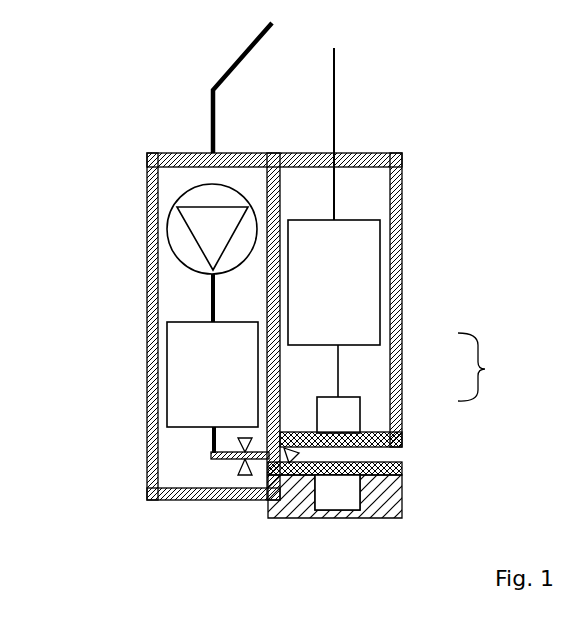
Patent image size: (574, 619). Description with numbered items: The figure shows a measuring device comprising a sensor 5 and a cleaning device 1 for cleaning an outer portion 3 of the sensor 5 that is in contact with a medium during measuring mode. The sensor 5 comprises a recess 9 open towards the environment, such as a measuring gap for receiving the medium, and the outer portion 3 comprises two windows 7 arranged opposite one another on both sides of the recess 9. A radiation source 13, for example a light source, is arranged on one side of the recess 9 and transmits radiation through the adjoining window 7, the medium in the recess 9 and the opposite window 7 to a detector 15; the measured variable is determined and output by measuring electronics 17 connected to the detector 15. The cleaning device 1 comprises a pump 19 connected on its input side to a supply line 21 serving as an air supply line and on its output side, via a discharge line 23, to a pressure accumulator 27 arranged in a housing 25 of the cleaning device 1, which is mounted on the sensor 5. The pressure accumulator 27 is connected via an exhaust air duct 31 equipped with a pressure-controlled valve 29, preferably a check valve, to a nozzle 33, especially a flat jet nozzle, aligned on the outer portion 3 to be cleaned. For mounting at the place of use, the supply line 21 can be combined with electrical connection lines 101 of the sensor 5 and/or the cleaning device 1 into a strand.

The cleaning device 1 is at (122, 158).
The outer portion 3 is at (481, 367).
The sensor 5 is at (412, 155).
The window 7 is at (347, 433).
The recess 9 is at (382, 457).
The radiation source 13 is at (337, 492).
The detector 15 is at (338, 389).
The measuring electronics 17 is at (334, 282).
The pump 19 is at (205, 235).
The supply line 21 is at (233, 67).
The discharge line 23 is at (210, 297).
The housing 25 is at (150, 345).
The pressure accumulator 27 is at (212, 374).
The pressure-controlled valve 29 is at (244, 463).
The exhaust air duct 31 is at (213, 452).
The nozzle 33 is at (294, 458).
The electrical connection lines 101 is at (335, 100).